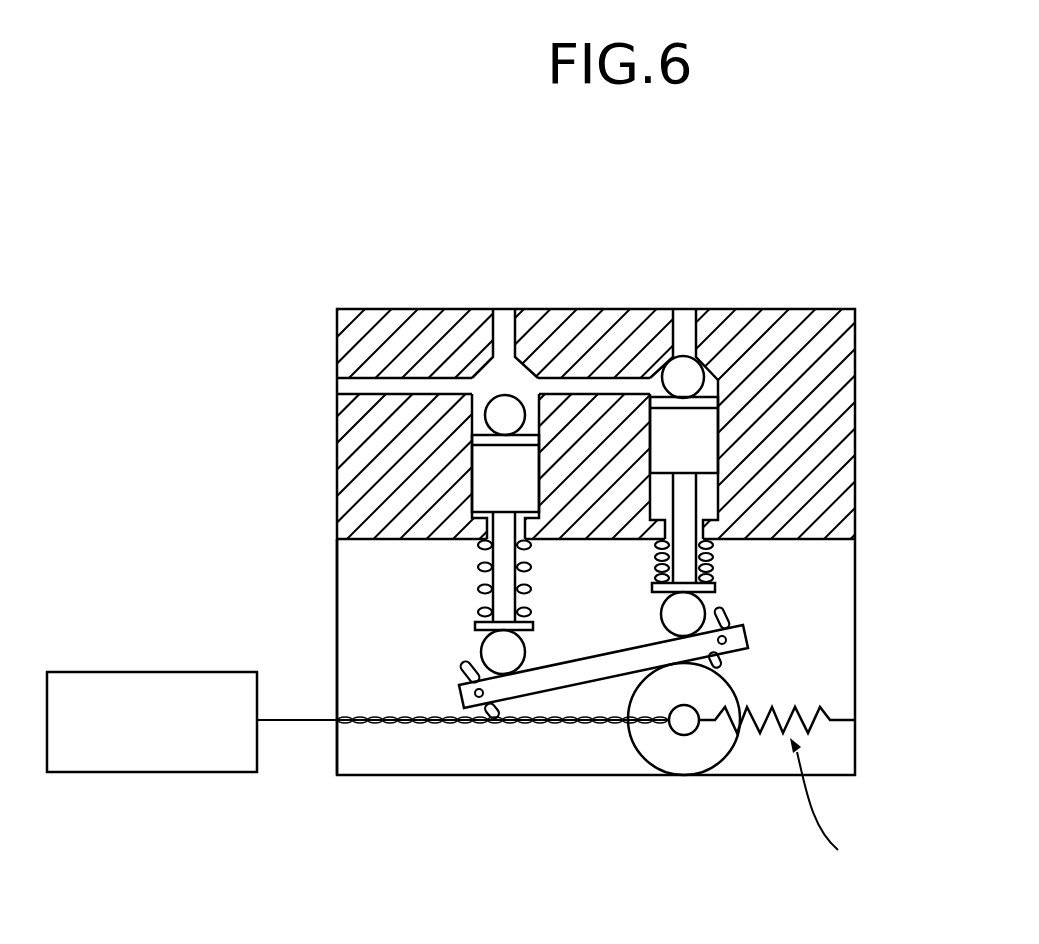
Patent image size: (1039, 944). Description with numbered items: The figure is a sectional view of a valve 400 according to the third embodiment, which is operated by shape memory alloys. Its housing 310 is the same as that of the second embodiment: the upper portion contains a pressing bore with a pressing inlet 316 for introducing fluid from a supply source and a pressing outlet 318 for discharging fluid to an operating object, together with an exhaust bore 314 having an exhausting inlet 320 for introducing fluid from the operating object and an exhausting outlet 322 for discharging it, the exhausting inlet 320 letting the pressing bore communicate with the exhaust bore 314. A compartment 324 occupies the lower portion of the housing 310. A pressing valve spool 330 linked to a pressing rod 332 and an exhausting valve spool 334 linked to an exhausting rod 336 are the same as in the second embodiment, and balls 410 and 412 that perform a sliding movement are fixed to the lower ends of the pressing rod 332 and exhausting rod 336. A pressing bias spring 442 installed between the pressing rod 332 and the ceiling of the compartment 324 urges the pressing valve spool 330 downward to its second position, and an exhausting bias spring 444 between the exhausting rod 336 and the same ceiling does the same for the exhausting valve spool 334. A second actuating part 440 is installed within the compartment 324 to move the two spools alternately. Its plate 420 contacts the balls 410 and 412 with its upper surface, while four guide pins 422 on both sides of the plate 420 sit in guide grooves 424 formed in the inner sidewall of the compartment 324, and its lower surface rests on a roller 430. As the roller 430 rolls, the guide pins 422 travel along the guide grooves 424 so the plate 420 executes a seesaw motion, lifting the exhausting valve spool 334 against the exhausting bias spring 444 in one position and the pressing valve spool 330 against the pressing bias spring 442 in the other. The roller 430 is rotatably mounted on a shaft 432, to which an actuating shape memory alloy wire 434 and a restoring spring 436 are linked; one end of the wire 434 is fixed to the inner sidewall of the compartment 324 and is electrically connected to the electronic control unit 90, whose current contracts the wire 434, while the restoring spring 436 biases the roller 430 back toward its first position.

The electronic control unit 90 is at (153, 762).
The housing 310 is at (858, 378).
The exhaust bore 314 is at (721, 372).
The pressing inlet 316 is at (500, 318).
The pressing outlet 318 is at (360, 390).
The exhausting inlet 320 is at (597, 387).
The exhausting outlet 322 is at (686, 325).
The compartment 324 is at (367, 595).
The pressing valve spool 330 is at (490, 462).
The pressing rod 332 is at (480, 525).
The exhausting valve spool 334 is at (718, 435).
The exhausting rod 336 is at (690, 493).
The valve 400 is at (858, 262).
The ball 410 is at (482, 645).
The ball 412 is at (703, 602).
The plate 420 is at (597, 663).
The guide pins 422 is at (747, 638).
The guide grooves 424 is at (722, 663).
The roller 430 is at (695, 763).
The shaft 432 is at (680, 724).
The actuating shape memory alloy wire 434 is at (443, 727).
The restoring spring 436 is at (813, 720).
The second actuating part 440 is at (838, 812).
The pressing bias spring 442 is at (480, 562).
The exhausting bias spring 444 is at (717, 560).